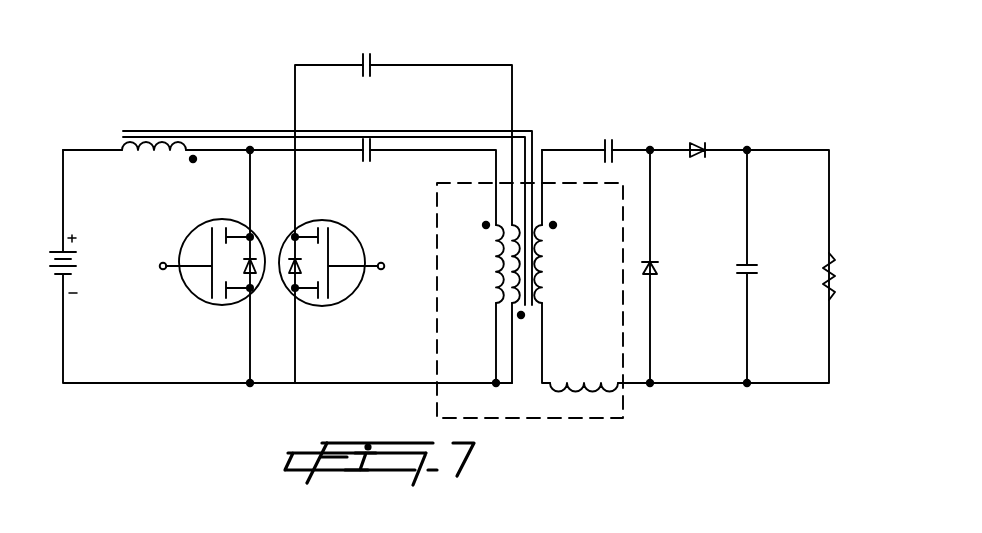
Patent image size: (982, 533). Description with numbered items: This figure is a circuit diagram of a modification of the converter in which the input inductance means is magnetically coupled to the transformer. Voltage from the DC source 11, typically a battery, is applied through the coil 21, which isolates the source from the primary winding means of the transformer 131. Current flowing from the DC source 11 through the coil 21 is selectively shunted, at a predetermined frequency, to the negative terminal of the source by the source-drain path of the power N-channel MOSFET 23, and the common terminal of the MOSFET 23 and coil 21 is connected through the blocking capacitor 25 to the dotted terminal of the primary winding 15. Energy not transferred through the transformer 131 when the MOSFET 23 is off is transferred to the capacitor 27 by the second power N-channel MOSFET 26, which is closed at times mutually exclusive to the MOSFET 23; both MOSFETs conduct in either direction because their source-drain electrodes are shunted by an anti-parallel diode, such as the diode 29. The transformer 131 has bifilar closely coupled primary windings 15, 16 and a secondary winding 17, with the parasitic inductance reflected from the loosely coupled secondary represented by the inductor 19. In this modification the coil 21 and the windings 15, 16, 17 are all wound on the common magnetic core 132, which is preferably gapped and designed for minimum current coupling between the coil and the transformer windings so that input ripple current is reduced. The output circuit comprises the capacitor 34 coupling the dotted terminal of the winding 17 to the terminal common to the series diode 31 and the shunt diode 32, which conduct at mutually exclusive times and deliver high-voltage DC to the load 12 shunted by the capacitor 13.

The DC source 11 is at (48, 253).
The load 12 is at (838, 262).
The capacitor 13 is at (750, 266).
The primary winding 15 is at (496, 284).
The primary winding 16 is at (521, 297).
The secondary winding 17 is at (546, 277).
The inductor 19 is at (594, 382).
The coil 21 is at (146, 146).
The power N-channel MOSFET 23 is at (207, 278).
The blocking capacitor 25 is at (371, 158).
The power N-channel MOSFET 26 is at (358, 292).
The capacitor 27 is at (376, 50).
The body diode of transistor Q2 29 is at (290, 277).
The series diode 31 is at (700, 140).
The shunt diode 32 is at (656, 262).
The capacitor 34 is at (611, 138).
The transformer 131 is at (545, 411).
The common magnetic core 132 is at (255, 133).